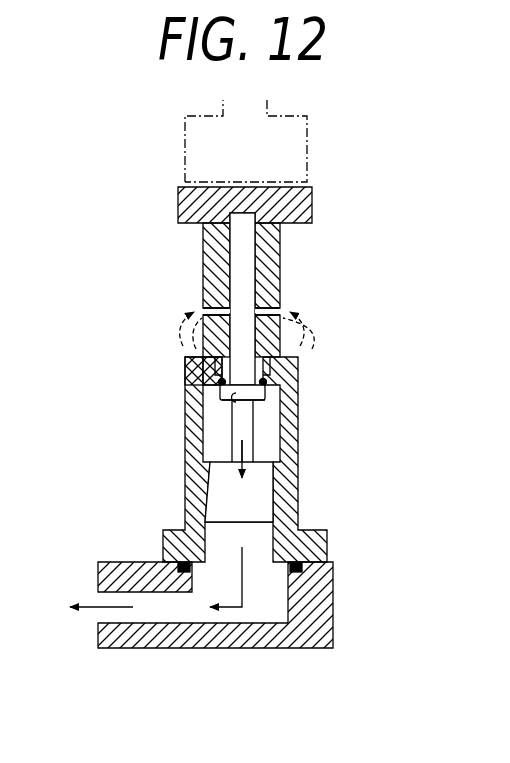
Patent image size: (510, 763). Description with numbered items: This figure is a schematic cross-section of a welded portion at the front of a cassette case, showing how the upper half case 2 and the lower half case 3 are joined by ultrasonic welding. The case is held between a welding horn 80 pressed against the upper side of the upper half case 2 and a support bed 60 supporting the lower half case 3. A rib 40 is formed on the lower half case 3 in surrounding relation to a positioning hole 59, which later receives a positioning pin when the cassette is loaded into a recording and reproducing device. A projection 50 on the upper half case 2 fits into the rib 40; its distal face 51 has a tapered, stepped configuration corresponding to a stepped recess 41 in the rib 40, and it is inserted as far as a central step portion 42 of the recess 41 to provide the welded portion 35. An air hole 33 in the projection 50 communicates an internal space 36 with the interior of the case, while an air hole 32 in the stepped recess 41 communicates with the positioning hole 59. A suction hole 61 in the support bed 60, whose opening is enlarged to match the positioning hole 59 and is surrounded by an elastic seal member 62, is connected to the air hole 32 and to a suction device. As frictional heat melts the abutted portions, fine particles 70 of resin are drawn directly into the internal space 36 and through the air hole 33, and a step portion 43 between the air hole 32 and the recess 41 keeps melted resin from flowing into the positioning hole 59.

The upper half case 2 is at (178, 203).
The lower half case 3 is at (310, 532).
The air hole 32 is at (211, 480).
The air hole 33 is at (225, 300).
The welded portion 35 is at (268, 389).
The internal space 36 is at (268, 400).
The rib 40 is at (225, 434).
The stepped recess 41 is at (186, 374).
The central step portion 42 is at (205, 386).
The step portion 43 is at (232, 428).
The projection 50 is at (203, 258).
The distal face 51 is at (283, 309).
The positioning hole 59 is at (308, 598).
The support bed 60 is at (267, 638).
The suction hole 61 is at (138, 602).
The seal member 62 is at (178, 540).
The fine particles 70 is at (183, 338).
The welding horn 80 is at (308, 142).